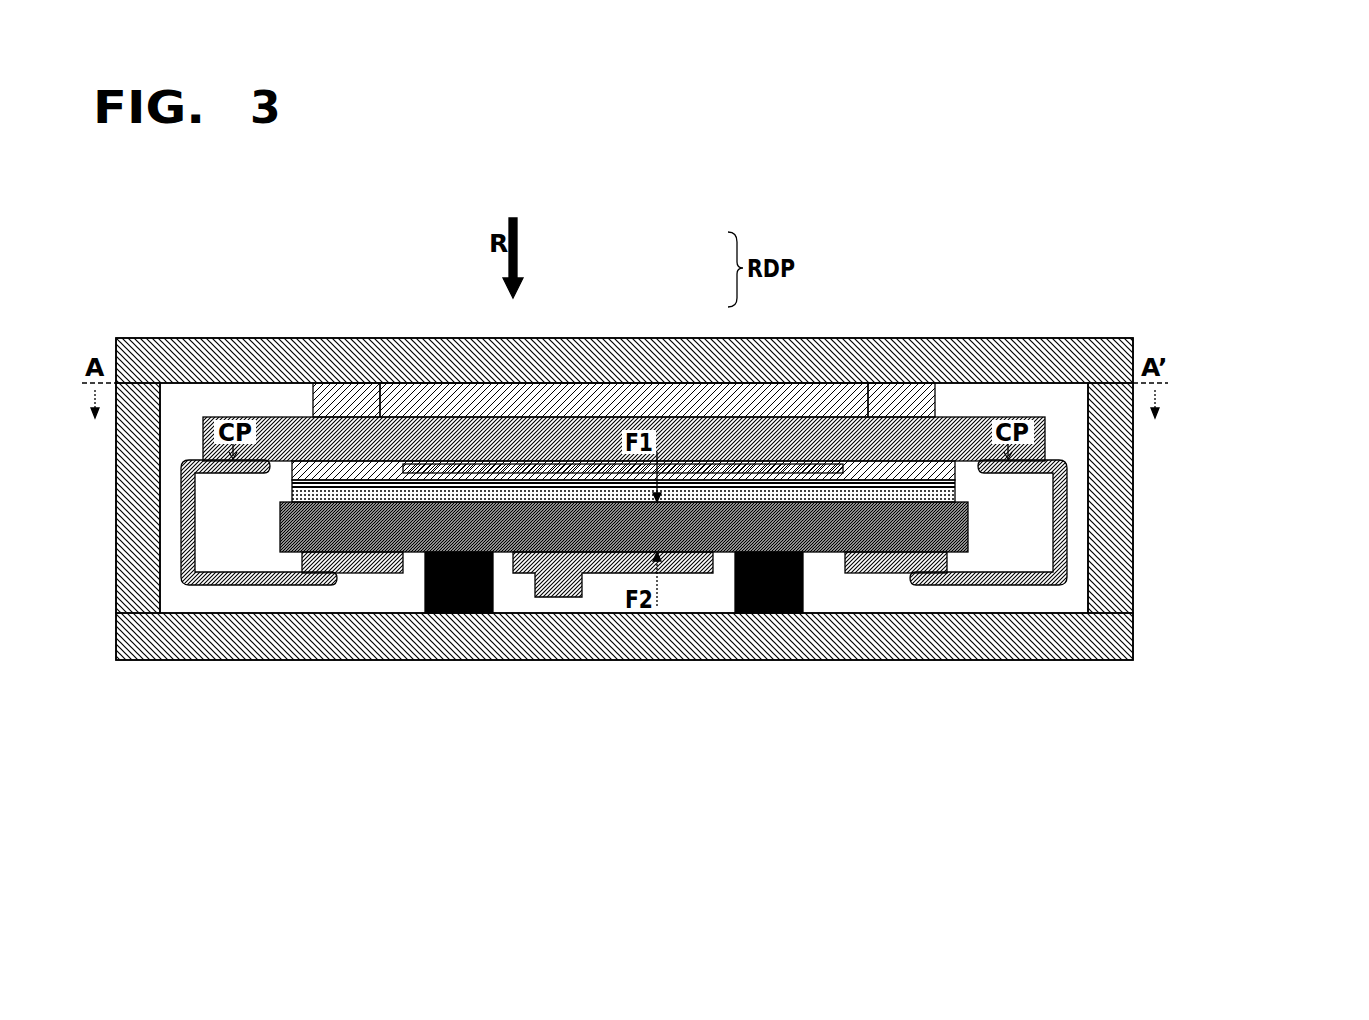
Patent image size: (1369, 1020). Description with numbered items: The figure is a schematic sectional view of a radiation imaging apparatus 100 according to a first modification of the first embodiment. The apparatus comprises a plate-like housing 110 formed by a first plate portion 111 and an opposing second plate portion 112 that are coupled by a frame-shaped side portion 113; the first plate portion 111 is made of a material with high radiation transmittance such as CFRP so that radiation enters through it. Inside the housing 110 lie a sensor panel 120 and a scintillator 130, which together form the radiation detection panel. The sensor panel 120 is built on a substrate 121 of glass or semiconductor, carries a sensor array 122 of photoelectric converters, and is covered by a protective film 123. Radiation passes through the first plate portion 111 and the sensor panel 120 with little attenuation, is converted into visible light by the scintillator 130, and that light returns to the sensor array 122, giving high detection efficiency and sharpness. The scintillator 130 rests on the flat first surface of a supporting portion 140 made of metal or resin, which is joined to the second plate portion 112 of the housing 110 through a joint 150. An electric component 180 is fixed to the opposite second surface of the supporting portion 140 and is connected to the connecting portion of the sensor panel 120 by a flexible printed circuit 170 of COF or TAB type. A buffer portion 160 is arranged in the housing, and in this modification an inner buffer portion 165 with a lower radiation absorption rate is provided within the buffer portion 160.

The radiation imaging apparatus 100 is at (597, 725).
The housing 110 is at (733, 489).
The first plate portion 111 is at (1033, 347).
The second plate portion 112 is at (1060, 650).
The side portion 113 is at (1117, 500).
The sensor panel 120 is at (624, 352).
The substrate 121 is at (500, 433).
The sensor array 122 is at (517, 470).
The protective film 123 is at (542, 478).
The scintillator 130 is at (702, 493).
The supporting portion 140 is at (947, 505).
The joint 150 is at (457, 552).
The buffer portion 160 is at (347, 395).
The inner buffer portion 165 is at (790, 405).
The flexible printed circuit 170 is at (233, 473).
The electric component 180 is at (355, 573).